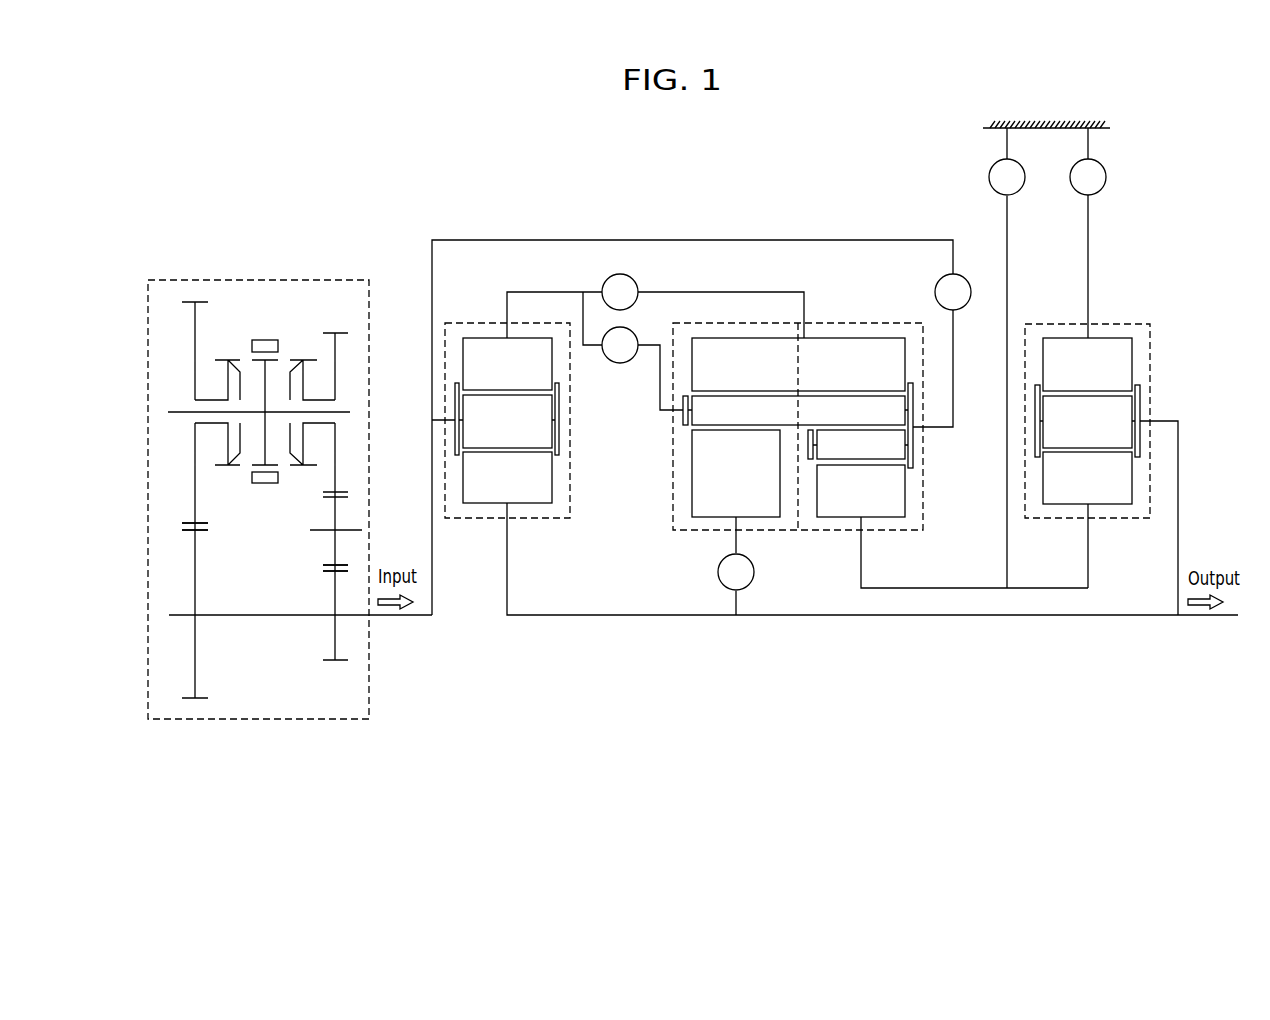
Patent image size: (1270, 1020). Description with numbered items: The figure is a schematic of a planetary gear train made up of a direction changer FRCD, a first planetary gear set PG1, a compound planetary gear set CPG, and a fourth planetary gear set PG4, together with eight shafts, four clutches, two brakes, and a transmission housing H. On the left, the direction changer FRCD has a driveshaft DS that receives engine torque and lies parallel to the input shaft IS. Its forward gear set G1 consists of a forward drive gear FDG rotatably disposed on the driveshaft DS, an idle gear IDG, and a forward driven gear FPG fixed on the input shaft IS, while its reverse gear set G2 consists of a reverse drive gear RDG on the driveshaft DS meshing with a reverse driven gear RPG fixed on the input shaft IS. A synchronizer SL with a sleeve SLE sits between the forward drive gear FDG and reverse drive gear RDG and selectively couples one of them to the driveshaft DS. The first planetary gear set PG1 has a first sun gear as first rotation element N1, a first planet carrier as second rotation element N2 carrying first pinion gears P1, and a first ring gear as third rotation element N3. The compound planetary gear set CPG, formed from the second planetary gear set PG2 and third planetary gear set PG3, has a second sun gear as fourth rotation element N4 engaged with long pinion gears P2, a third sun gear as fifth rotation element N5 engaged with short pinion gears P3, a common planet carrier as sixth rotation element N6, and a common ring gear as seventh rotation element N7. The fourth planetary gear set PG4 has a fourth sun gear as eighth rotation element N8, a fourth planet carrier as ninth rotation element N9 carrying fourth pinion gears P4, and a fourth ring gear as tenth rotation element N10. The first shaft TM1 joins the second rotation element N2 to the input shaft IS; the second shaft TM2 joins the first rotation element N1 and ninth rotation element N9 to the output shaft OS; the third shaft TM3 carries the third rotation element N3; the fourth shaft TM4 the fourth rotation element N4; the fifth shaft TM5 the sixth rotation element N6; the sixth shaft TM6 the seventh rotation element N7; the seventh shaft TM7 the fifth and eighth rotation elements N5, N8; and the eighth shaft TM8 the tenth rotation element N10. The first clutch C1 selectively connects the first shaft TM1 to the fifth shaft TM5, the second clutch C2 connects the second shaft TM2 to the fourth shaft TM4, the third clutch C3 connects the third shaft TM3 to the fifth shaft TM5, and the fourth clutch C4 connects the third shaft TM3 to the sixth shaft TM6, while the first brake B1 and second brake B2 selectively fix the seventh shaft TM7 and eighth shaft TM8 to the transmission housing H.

The direction changer FRCD is at (162, 262).
The reverse drive gear RDG is at (195, 335).
The driveshaft DS is at (180, 417).
The synchronizer SL is at (256, 320).
The sleeve SLE is at (270, 338).
The forward drive gear FDG is at (337, 350).
The forward gear set G1 is at (331, 680).
The reverse gear set G2 is at (190, 720).
The idle gear IDG is at (335, 548).
The reverse driven gear RPG is at (195, 653).
The forward driven gear FPG is at (337, 635).
The input shaft IS is at (257, 615).
The output shaft OS is at (1208, 618).
The first planetary gear set PG1 is at (477, 530).
The second planetary gear set PG2 is at (775, 540).
The third planetary gear set PG3 is at (833, 540).
The fourth planetary gear set PG4 is at (1063, 530).
The compound planetary gear set CPG is at (851, 699).
The first rotation element N1 is at (507, 477).
The second rotation element N2 is at (560, 455).
The third rotation element N3 is at (507, 364).
The fourth rotation element N4 is at (736, 473).
The fifth rotation element N5 is at (861, 491).
The sixth rotation element N6 is at (913, 468).
The seventh rotation element N7 is at (798, 364).
The eighth rotation element N8 is at (1087, 520).
The ninth rotation element N9 is at (1140, 385).
The tenth rotation element N10 is at (1087, 364).
The first pinion gears P1 is at (507, 421).
The long pinion gears P2 is at (795, 410).
The short pinion gears P3 is at (858, 444).
The fourth pinion gears P4 is at (1087, 422).
The first shaft TM1 is at (630, 240).
The second shaft TM2 is at (958, 618).
The third shaft TM3 is at (550, 290).
The fourth shaft TM4 is at (736, 543).
The fifth shaft TM5 is at (955, 342).
The sixth shaft TM6 is at (718, 292).
The seventh shaft TM7 is at (1007, 240).
The eighth shaft TM8 is at (1088, 275).
The first clutch C1 is at (953, 292).
The second clutch C2 is at (736, 572).
The third clutch C3 is at (633, 351).
The fourth clutch C4 is at (620, 292).
The first brake B1 is at (1007, 161).
The second brake B2 is at (1088, 161).
The transmission housing H is at (1043, 122).